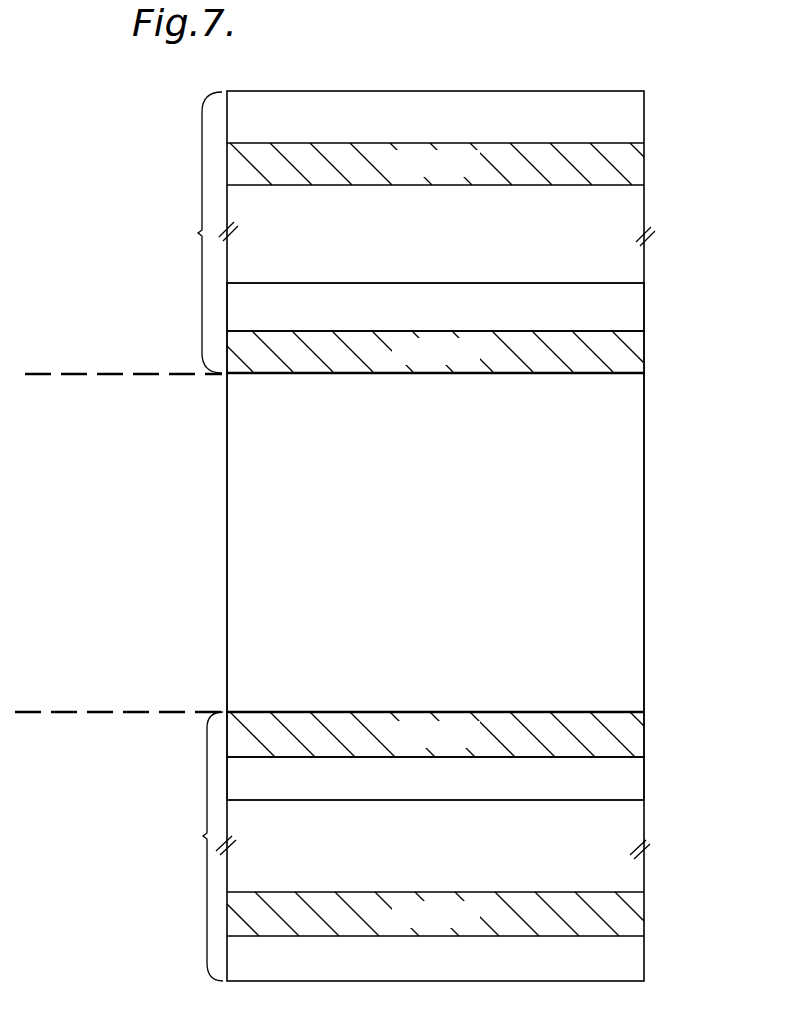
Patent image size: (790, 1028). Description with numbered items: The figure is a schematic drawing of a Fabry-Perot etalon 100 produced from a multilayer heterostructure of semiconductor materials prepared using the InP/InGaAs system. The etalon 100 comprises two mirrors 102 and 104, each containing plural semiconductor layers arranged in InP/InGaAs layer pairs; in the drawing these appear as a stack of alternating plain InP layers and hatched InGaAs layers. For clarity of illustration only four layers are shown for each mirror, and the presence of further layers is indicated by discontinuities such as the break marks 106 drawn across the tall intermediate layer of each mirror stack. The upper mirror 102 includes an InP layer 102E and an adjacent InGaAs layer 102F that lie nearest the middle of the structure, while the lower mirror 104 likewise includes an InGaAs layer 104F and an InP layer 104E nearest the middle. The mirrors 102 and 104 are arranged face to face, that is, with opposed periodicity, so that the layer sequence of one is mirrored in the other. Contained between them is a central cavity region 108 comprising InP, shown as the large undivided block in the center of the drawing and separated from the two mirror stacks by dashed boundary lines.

The etalon 100 is at (604, 90).
The mirror 102 is at (200, 233).
The InP layer of upper stack 102E is at (641, 304).
The InGaAs layer of upper stack 102F is at (640, 346).
The mirror 104 is at (203, 836).
The InP layer of lower stack 104E is at (633, 777).
The InGaAs layer of lower stack 104F is at (635, 734).
The discontinuity 106 is at (651, 230).
The central cavity region 108 is at (637, 529).